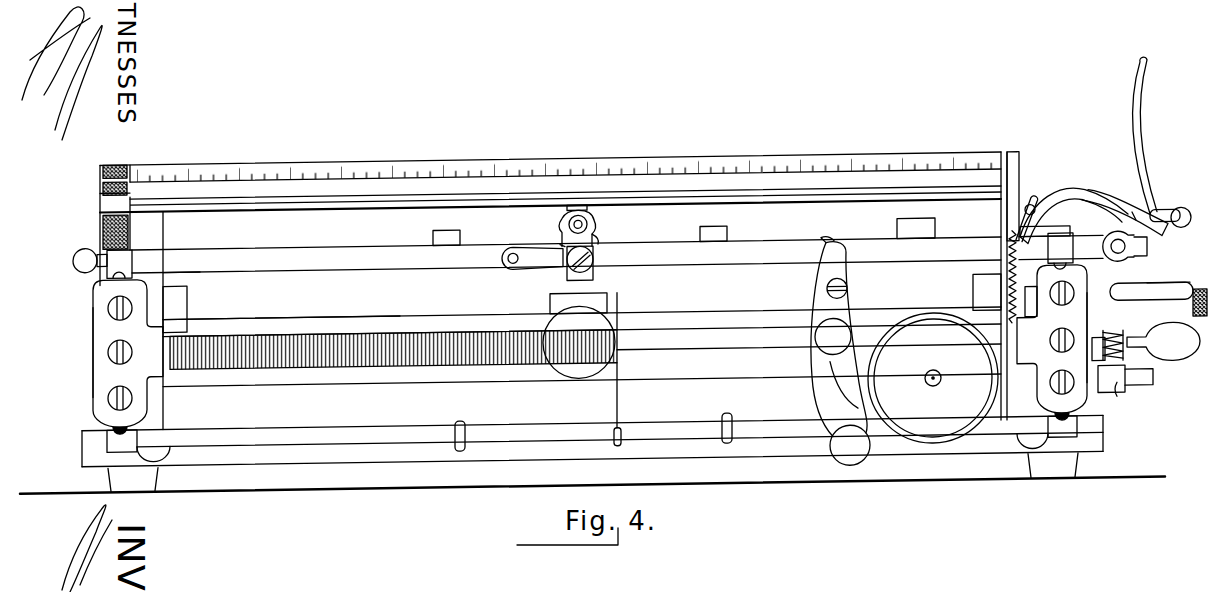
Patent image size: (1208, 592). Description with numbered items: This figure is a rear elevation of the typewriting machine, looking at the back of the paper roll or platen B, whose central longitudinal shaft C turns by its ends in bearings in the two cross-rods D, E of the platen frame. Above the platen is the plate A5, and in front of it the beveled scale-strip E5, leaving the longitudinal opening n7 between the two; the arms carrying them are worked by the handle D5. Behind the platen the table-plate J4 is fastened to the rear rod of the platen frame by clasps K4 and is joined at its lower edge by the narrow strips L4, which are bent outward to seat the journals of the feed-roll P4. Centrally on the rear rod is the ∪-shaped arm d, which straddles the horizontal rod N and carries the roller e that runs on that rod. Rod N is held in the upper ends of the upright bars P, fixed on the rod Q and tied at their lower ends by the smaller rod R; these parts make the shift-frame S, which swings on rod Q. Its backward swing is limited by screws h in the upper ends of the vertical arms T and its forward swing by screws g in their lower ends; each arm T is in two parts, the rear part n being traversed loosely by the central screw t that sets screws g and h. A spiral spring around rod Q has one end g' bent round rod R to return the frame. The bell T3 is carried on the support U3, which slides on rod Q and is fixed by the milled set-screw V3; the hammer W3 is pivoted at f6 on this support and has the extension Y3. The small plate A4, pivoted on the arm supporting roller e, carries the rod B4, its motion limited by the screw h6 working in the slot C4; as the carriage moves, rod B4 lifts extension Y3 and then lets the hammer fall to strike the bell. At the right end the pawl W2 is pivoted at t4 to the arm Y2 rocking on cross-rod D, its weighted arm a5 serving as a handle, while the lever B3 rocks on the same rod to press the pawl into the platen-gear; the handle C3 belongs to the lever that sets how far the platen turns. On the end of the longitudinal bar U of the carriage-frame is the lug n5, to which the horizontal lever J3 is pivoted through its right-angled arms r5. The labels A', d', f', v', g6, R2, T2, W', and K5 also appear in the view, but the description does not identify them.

The scale-strip E5 is at (548, 152).
The longitudinal opening n7 is at (573, 183).
The plate A5 is at (940, 185).
The upright bars P is at (130, 249).
The cross-rod E is at (84, 238).
The handle D5 is at (100, 272).
The vertical arms T is at (590, 364).
The rear part of vertical arm n is at (103, 360).
The screws h is at (108, 299).
The central screw t is at (131, 346).
The screws g is at (584, 399).
The narrow strips L4 is at (188, 308).
The table-plate J4 is at (582, 259).
The clasps K4 is at (452, 230).
The small plate A4 is at (562, 238).
The roller e is at (590, 224).
The screw h6 is at (565, 224).
The ∪-shaped arm d is at (613, 231).
The screw g6 is at (596, 258).
The slot C4 is at (560, 244).
The rod B4 is at (503, 255).
The horizontal rod N is at (640, 248).
The block d' is at (563, 302).
The frame A' is at (592, 379).
The worm screw f' is at (393, 358).
The feed-roll P4 is at (685, 312).
The shift-frame S is at (748, 262).
The rod Q is at (668, 344).
The rod R is at (527, 427).
The collar v' is at (601, 419).
The spring end g' is at (605, 420).
The bell-hammer W3 is at (812, 361).
The hammer extension Y3 is at (840, 252).
The hammer pivot f6 is at (847, 295).
The set-screw V3 is at (815, 341).
The bell support U3 is at (845, 388).
The bell T3 is at (933, 378).
The spring R2 is at (1003, 237).
The bar T2 is at (1045, 222).
The paper roll or platen B is at (1021, 243).
The pawl pivot t4 is at (1029, 211).
The pawl W2 is at (1074, 205).
The pawl-supporting arm Y2 is at (1088, 203).
The pawl arm a5 is at (1132, 220).
The lever B3 is at (1157, 194).
The platen shaft C is at (1105, 256).
The cross-rod D is at (1147, 261).
The rod W' is at (1158, 299).
The handle C3 is at (1155, 298).
The lever arms r5 is at (1126, 304).
The horizontal lever J3 is at (1116, 345).
The knob K5 is at (1150, 348).
The longitudinal bar U is at (1140, 382).
The lug n5 is at (1127, 400).